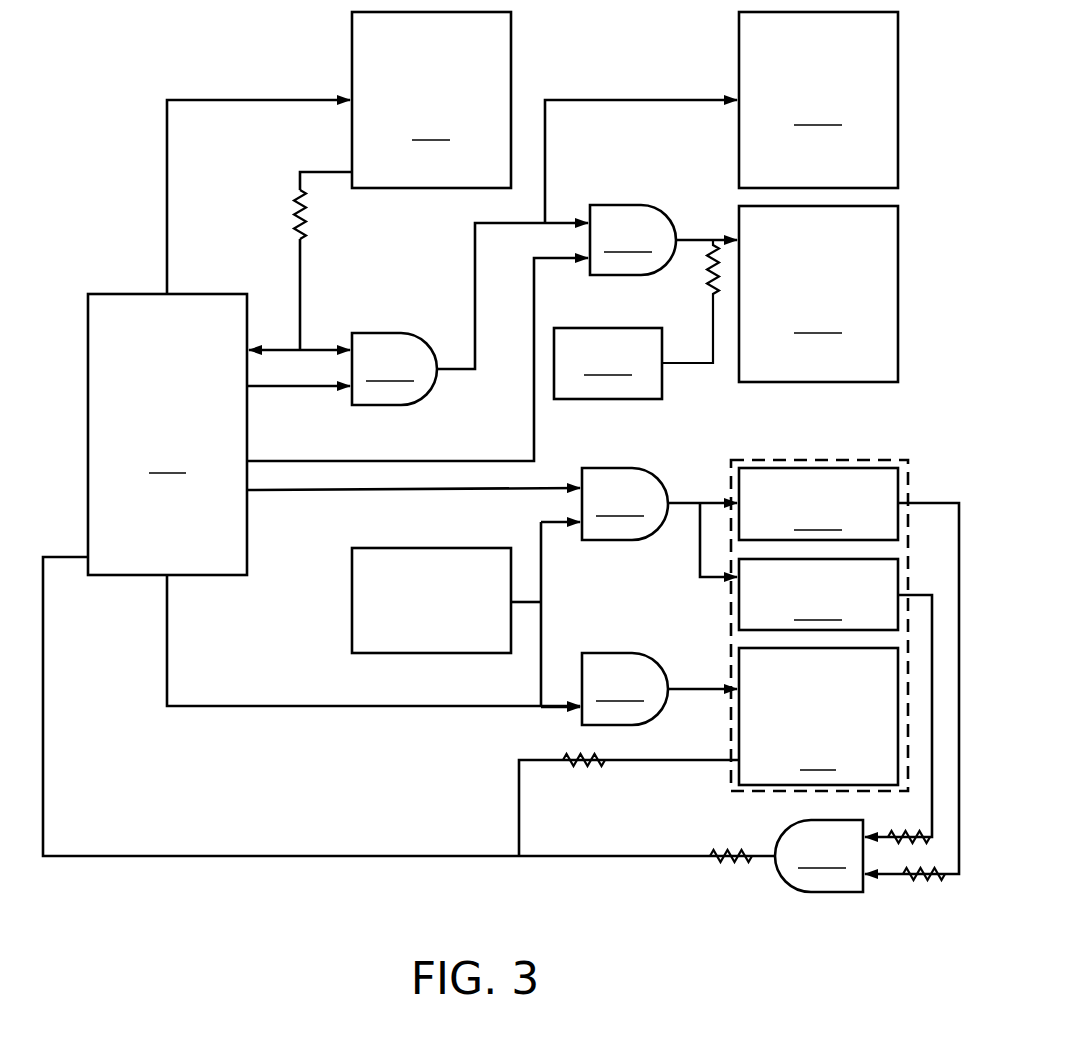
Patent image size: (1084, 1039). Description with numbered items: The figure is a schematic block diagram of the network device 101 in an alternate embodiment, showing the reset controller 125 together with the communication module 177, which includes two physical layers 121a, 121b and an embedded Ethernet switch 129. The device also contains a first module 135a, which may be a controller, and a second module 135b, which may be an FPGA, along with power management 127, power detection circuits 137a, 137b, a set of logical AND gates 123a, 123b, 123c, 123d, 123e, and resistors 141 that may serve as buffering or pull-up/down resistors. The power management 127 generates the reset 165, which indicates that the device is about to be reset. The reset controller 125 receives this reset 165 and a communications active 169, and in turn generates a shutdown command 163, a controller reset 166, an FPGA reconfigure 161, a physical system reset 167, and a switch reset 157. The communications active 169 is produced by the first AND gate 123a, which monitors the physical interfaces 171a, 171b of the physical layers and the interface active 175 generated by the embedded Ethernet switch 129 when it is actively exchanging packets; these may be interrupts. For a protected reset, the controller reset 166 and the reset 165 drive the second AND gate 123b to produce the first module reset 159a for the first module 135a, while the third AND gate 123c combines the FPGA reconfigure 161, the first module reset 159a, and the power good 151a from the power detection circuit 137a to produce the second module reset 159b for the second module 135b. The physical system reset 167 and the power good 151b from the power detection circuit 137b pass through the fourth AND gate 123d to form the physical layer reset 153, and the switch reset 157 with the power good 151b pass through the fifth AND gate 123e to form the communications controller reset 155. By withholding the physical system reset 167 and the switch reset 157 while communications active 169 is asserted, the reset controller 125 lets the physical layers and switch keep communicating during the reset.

The network device 101 is at (121, 97).
The physical layer 121a is at (818, 504).
The physical layer 121b is at (818, 594).
The first AND gate 123a is at (819, 856).
The second AND gate 123b is at (394, 369).
The third AND gate 123c is at (633, 240).
The fourth AND gate 123d is at (625, 504).
The fifth AND gate 123e is at (625, 689).
The reset controller 125 is at (167, 434).
The power management 127 is at (431, 100).
The embedded Ethernet switch 129 is at (818, 716).
The first module 135a is at (818, 100).
The second module 135b is at (818, 294).
The power detection circuit 137a is at (608, 363).
The power detection circuit 137b is at (431, 600).
The resistor 141 is at (298, 225).
The power good 151a is at (680, 363).
The power good 151b is at (541, 585).
The physical layer reset 153 is at (697, 503).
The communications controller reset 155 is at (697, 689).
The switch reset 157 is at (260, 706).
The first module reset 159a is at (474, 275).
The second module reset 159b is at (700, 240).
The FPGA reconfigure 161 is at (505, 461).
The shutdown command 163 is at (248, 100).
The reset 165 is at (298, 294).
The controller reset 166 is at (292, 387).
The physical system reset 167 is at (300, 491).
The communications active 169 is at (350, 856).
The physical interface 171a is at (930, 503).
The physical interface 171b is at (930, 595).
The interface active 175 is at (692, 760).
The communication module 177 is at (822, 460).